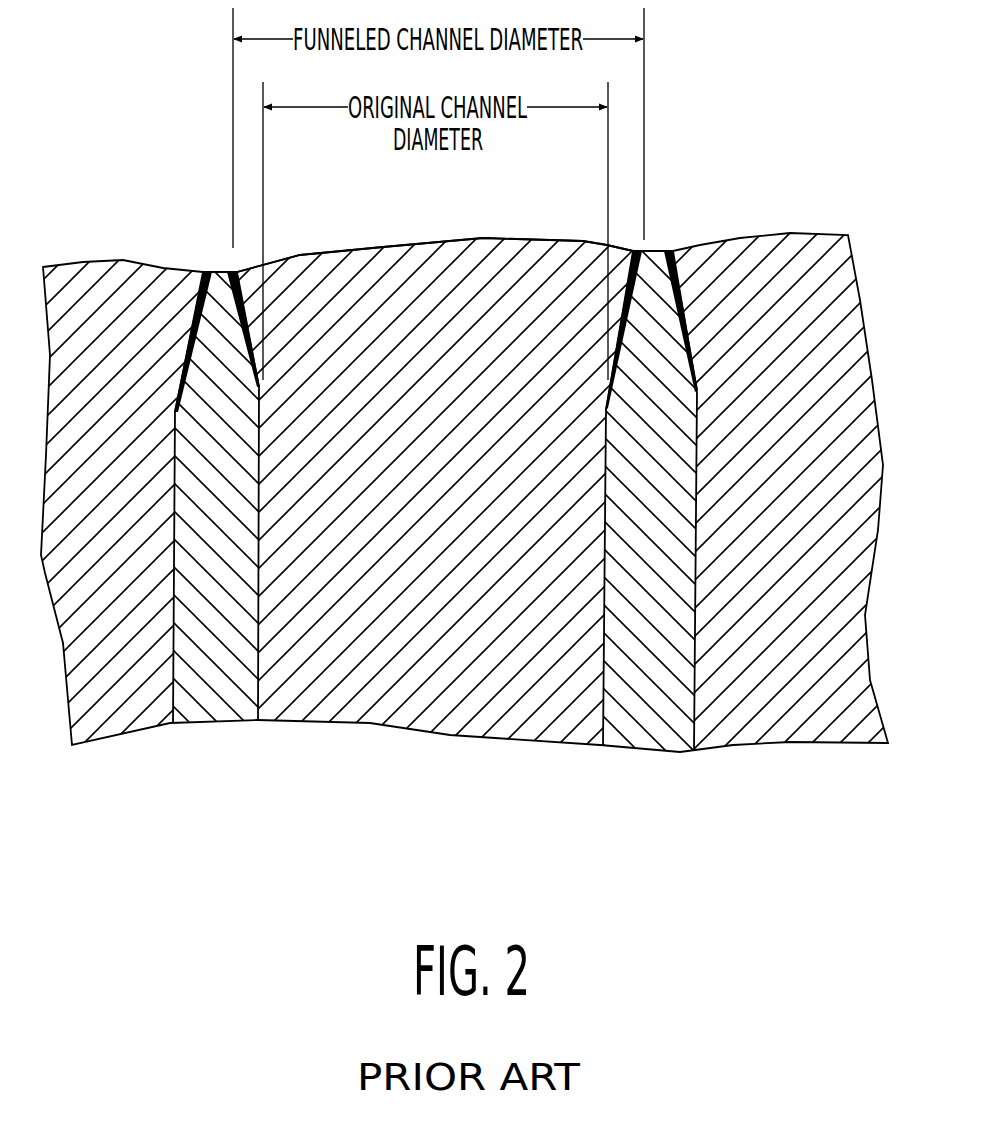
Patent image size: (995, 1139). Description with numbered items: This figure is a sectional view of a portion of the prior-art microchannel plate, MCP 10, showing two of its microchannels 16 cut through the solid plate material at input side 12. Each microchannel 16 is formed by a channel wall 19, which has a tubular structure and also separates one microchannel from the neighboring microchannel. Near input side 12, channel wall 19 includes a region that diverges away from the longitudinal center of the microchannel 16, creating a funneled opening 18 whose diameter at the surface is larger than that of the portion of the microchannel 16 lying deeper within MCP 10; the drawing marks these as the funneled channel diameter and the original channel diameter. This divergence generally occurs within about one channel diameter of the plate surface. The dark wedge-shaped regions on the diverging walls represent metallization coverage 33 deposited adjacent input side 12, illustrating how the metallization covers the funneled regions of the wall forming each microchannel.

The MCP 10 is at (355, 870).
The input side 12 is at (521, 219).
The microchannel 16 is at (102, 693).
The funneled opening 18 is at (437, 296).
The channel wall 19 is at (212, 695).
The metallization coverage 33 is at (200, 293).